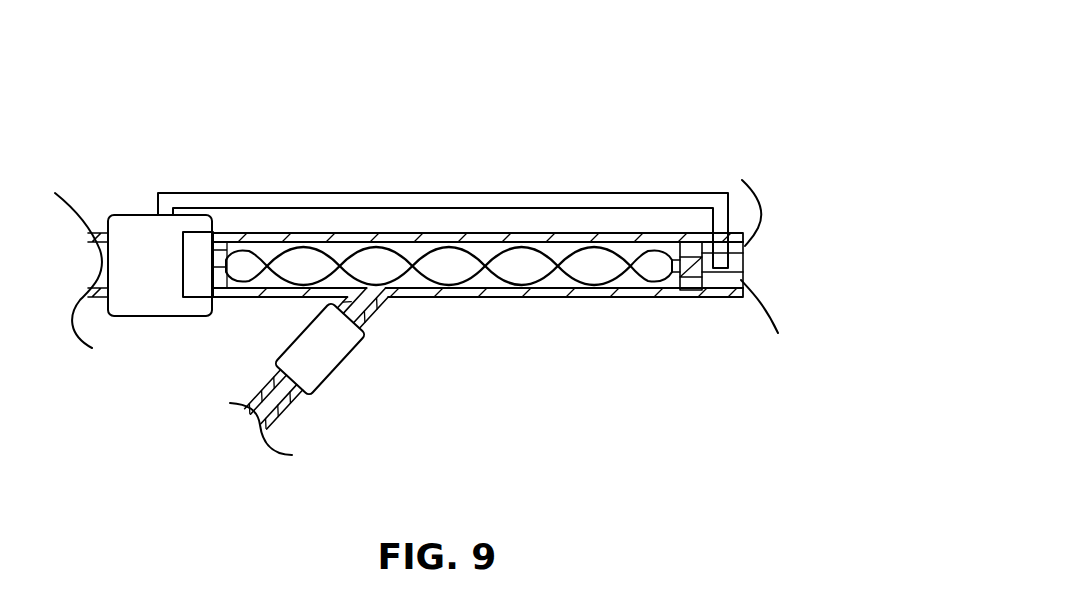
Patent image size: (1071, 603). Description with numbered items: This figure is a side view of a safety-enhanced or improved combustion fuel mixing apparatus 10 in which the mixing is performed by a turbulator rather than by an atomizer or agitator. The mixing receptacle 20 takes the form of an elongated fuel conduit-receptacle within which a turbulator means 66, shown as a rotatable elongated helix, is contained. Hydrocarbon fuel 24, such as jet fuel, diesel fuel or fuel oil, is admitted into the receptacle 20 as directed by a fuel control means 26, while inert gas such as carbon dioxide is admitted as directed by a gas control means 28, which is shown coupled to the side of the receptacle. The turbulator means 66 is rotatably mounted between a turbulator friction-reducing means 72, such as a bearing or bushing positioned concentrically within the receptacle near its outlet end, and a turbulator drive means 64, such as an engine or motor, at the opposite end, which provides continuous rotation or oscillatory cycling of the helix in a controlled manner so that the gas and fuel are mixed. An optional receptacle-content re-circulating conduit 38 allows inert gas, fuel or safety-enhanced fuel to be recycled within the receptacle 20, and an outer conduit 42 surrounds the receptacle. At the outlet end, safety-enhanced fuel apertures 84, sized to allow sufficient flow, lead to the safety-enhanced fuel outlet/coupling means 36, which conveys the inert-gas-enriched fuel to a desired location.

The mixing apparatus 10 is at (227, 97).
The mixing receptacle 20 is at (568, 300).
The fuel 24 is at (298, 260).
The fuel control means 26 is at (133, 232).
The gas control means 28 is at (333, 343).
The safety-enhanced fuel outlet/coupling means 36 is at (743, 268).
The receptacle-content re-circulating conduit 38 is at (262, 265).
The outer sheath 42 is at (392, 199).
The turbulator drive means 64 is at (183, 283).
The turbulator means 66 is at (577, 263).
The turbulator friction-reducing means 72 is at (743, 260).
The safety-enhanced fuel aperture 84 is at (743, 252).